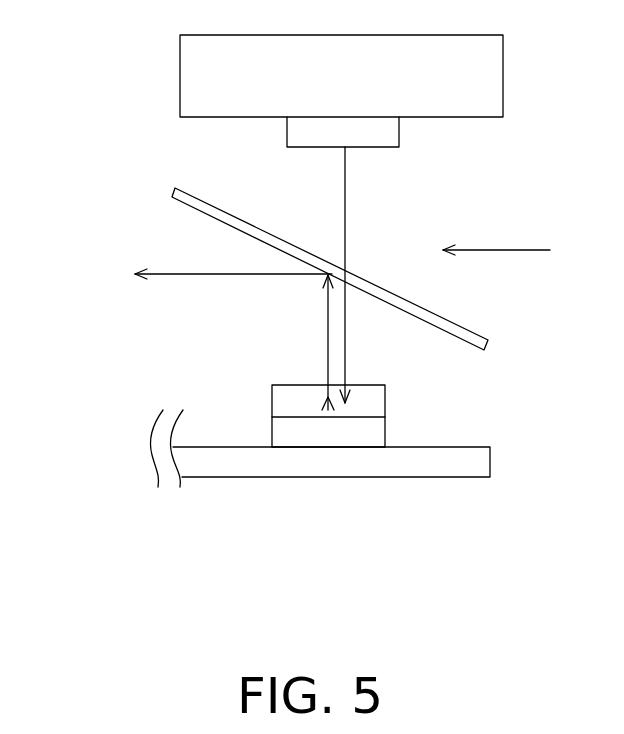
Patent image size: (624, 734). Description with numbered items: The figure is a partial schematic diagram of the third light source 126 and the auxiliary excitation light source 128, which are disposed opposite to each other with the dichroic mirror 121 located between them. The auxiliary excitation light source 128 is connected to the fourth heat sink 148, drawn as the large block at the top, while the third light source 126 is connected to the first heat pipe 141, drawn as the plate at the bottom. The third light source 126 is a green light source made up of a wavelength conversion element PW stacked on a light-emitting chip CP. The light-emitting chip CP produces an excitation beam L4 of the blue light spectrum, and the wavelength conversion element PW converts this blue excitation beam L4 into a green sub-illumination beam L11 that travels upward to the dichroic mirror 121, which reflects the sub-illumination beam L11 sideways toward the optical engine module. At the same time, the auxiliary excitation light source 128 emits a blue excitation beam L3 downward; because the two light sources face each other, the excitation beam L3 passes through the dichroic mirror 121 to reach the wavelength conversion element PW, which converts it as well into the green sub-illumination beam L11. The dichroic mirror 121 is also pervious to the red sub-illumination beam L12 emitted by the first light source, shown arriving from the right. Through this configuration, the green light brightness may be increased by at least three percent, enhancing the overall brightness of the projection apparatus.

The fourth heat sink 148 is at (198, 54).
The auxiliary excitation light source 128 is at (370, 130).
The dichroic mirror 121 is at (172, 200).
The third light source 126 is at (422, 420).
The first heat pipe 141 is at (457, 470).
The excitation beam L3 is at (347, 228).
The sub-illumination beam L11 is at (198, 276).
The sub-illumination beam L12 is at (507, 252).
The excitation beam L4 is at (325, 414).
The wavelength conversion element PW is at (386, 398).
The light-emitting chip CP is at (387, 430).